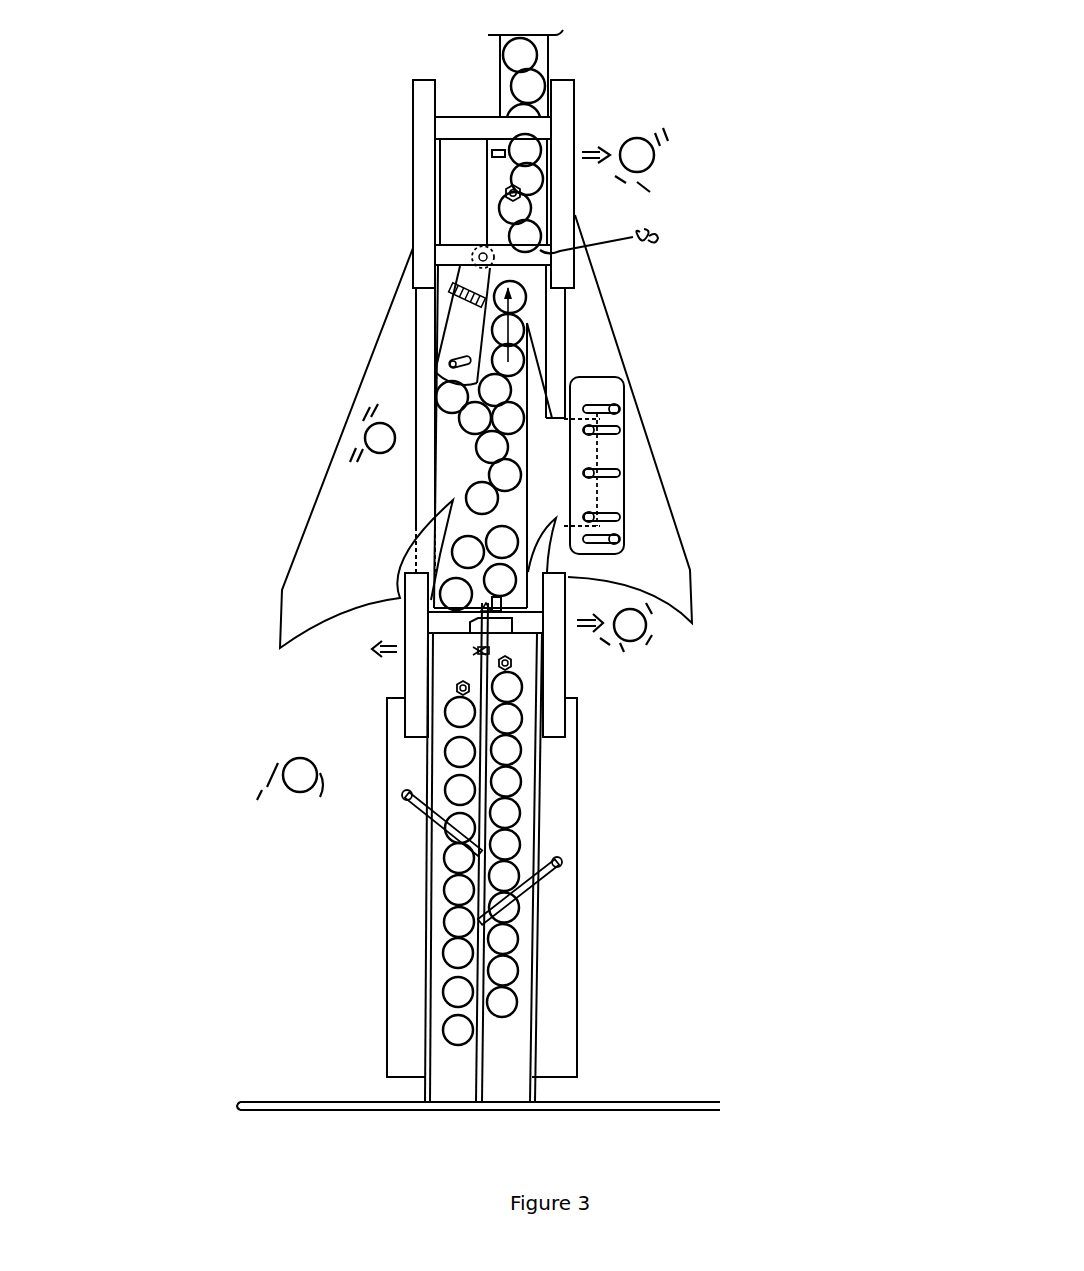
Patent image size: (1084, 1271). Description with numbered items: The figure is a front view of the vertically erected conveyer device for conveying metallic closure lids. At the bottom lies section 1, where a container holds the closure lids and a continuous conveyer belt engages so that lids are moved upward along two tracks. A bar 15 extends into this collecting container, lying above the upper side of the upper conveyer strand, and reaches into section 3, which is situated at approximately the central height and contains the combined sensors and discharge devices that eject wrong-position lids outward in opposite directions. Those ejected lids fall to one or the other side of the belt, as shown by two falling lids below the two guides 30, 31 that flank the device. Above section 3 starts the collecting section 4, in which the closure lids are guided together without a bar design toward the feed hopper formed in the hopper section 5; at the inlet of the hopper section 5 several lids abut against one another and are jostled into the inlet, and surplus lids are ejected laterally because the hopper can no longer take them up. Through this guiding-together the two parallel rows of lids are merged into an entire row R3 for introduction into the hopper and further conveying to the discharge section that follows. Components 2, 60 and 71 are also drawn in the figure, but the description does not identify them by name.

The section 1 is at (403, 1085).
The lower housing 2 is at (550, 798).
The section 3 is at (513, 646).
The collecting section 4 is at (458, 481).
The hopper section 5 is at (553, 338).
The bar 15 is at (481, 1058).
The guide 30 is at (316, 623).
The guide 31 is at (662, 603).
The diverter flap 60 is at (467, 338).
The control panel 71 is at (549, 453).
The entire row R3 is at (511, 320).